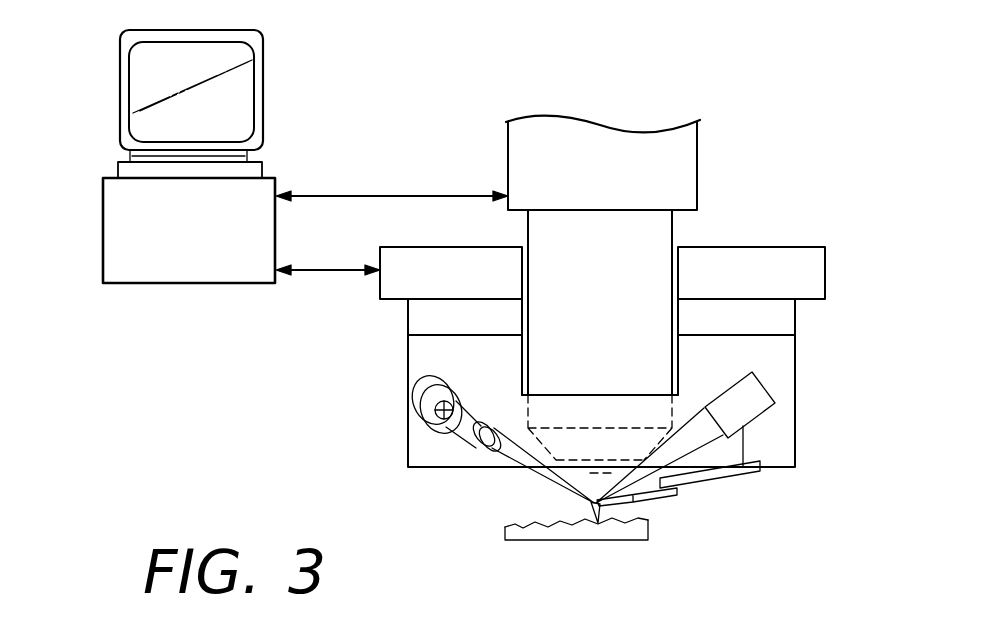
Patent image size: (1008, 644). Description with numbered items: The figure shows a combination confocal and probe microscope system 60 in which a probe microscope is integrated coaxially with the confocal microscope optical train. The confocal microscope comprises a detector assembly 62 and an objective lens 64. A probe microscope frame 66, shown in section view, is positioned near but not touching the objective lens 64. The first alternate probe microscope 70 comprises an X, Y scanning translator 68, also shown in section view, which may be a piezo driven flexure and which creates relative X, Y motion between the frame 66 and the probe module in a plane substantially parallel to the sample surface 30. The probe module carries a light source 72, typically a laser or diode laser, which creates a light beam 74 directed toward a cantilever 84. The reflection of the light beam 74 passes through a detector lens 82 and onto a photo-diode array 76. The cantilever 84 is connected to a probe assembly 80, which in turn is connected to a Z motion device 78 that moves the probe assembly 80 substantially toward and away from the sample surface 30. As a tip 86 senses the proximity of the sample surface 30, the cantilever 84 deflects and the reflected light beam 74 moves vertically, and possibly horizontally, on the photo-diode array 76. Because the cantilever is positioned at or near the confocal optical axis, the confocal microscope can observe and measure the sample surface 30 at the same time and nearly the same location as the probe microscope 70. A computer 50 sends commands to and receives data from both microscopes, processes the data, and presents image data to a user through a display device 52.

The sample surface 30 is at (505, 532).
The computer 50 is at (128, 200).
The display device 52 is at (142, 68).
The combination confocal and probe microscope system 60 is at (644, 234).
The detector assembly 62 is at (673, 158).
The objective lens 64 is at (642, 265).
The probe microscope frame 66 is at (816, 265).
The X, Y scanning translator 68 is at (782, 317).
The first alternate probe microscope 70 is at (780, 362).
The light source 72 is at (757, 404).
The light beam 74 is at (704, 437).
The photo-diode array 76 is at (428, 385).
The Z motion device 78 is at (740, 480).
The probe assembly 80 is at (664, 500).
The detector lens 82 is at (478, 447).
The cantilever 84 is at (616, 509).
The tip 86 is at (595, 512).